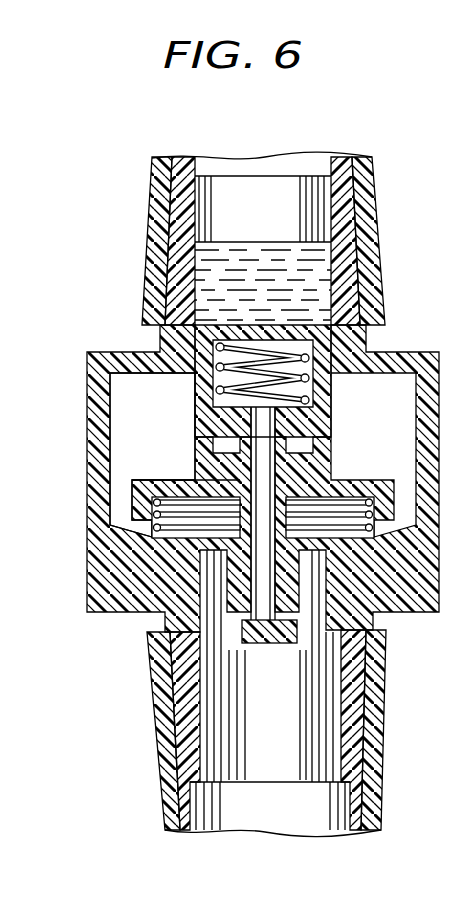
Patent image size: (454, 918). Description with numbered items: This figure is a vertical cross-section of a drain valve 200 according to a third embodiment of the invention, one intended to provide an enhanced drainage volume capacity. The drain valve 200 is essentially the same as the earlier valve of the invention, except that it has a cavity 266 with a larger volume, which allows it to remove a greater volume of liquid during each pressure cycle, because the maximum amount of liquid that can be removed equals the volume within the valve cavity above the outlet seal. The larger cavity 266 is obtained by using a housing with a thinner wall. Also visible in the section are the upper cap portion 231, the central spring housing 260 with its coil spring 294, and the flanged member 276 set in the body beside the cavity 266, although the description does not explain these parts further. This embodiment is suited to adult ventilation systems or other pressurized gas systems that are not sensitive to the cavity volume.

The drain valve 200 is at (96, 195).
The cap 231 is at (152, 230).
The spring housing 260 is at (227, 325).
The spring 294 is at (270, 353).
The cavity 266 is at (170, 426).
The flanged member 276 is at (160, 480).